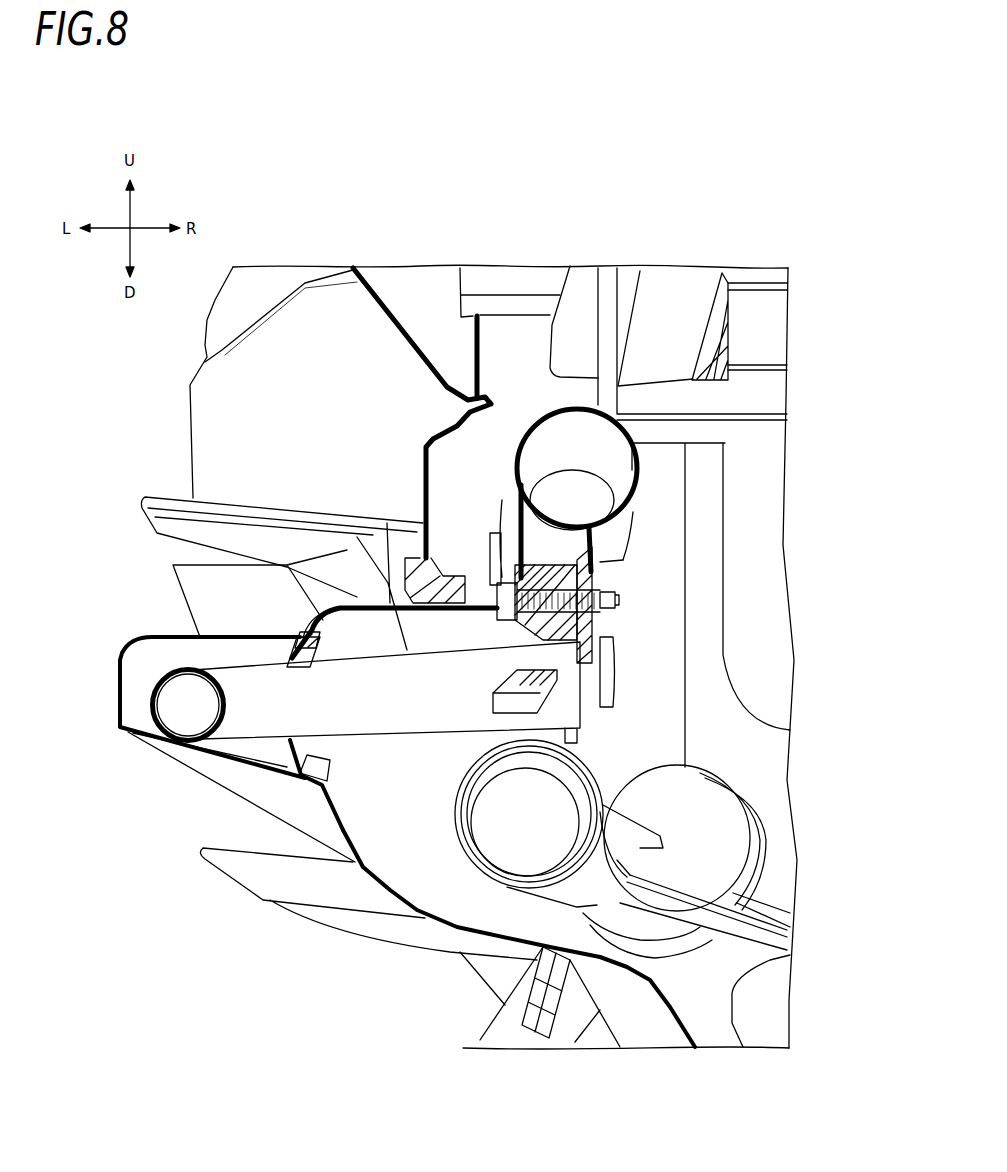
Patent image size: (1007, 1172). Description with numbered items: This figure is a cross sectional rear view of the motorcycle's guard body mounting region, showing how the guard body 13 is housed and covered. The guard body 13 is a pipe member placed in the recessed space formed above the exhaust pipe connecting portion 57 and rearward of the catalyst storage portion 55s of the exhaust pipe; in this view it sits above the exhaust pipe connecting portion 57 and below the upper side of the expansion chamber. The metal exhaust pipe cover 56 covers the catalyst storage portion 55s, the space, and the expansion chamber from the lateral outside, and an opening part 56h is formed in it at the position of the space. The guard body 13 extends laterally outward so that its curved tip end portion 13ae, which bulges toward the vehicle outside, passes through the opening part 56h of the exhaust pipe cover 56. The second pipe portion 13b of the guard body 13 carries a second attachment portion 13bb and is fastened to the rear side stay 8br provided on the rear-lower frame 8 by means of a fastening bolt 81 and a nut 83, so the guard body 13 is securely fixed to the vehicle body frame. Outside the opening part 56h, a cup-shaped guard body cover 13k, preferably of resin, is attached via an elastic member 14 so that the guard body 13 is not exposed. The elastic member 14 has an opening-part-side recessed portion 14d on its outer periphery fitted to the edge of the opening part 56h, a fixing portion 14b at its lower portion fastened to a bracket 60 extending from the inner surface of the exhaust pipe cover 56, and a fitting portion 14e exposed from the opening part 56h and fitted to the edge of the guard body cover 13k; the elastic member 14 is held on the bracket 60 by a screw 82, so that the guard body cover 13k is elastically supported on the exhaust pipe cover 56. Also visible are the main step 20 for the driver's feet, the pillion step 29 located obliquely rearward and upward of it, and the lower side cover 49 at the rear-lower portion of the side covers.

The rear-lower frame 8 is at (552, 414).
The rear side stay 8br is at (640, 548).
The guard body 13 is at (405, 657).
The second pipe portion 13b is at (420, 695).
The tip end portion 13ae is at (150, 690).
The guard body cover 13k is at (120, 638).
The second attachment portion 13bb is at (600, 628).
The elastic member 14 is at (327, 637).
The fixing portion 14b is at (322, 765).
The opening-part-side recessed portion 14d is at (312, 623).
The fitting portion 14e is at (297, 630).
The main step 20 is at (250, 876).
The pillion step 29 is at (143, 530).
The lower side cover 49 is at (420, 455).
The catalyst storage portion 55s is at (663, 968).
The exhaust pipe cover 56 is at (423, 920).
The opening part 56h is at (290, 653).
The exhaust pipe connecting portion 57 is at (497, 895).
The bracket 60 is at (340, 800).
The fastening bolt 81 is at (487, 585).
The screw 82 is at (273, 785).
The nut 83 is at (600, 580).